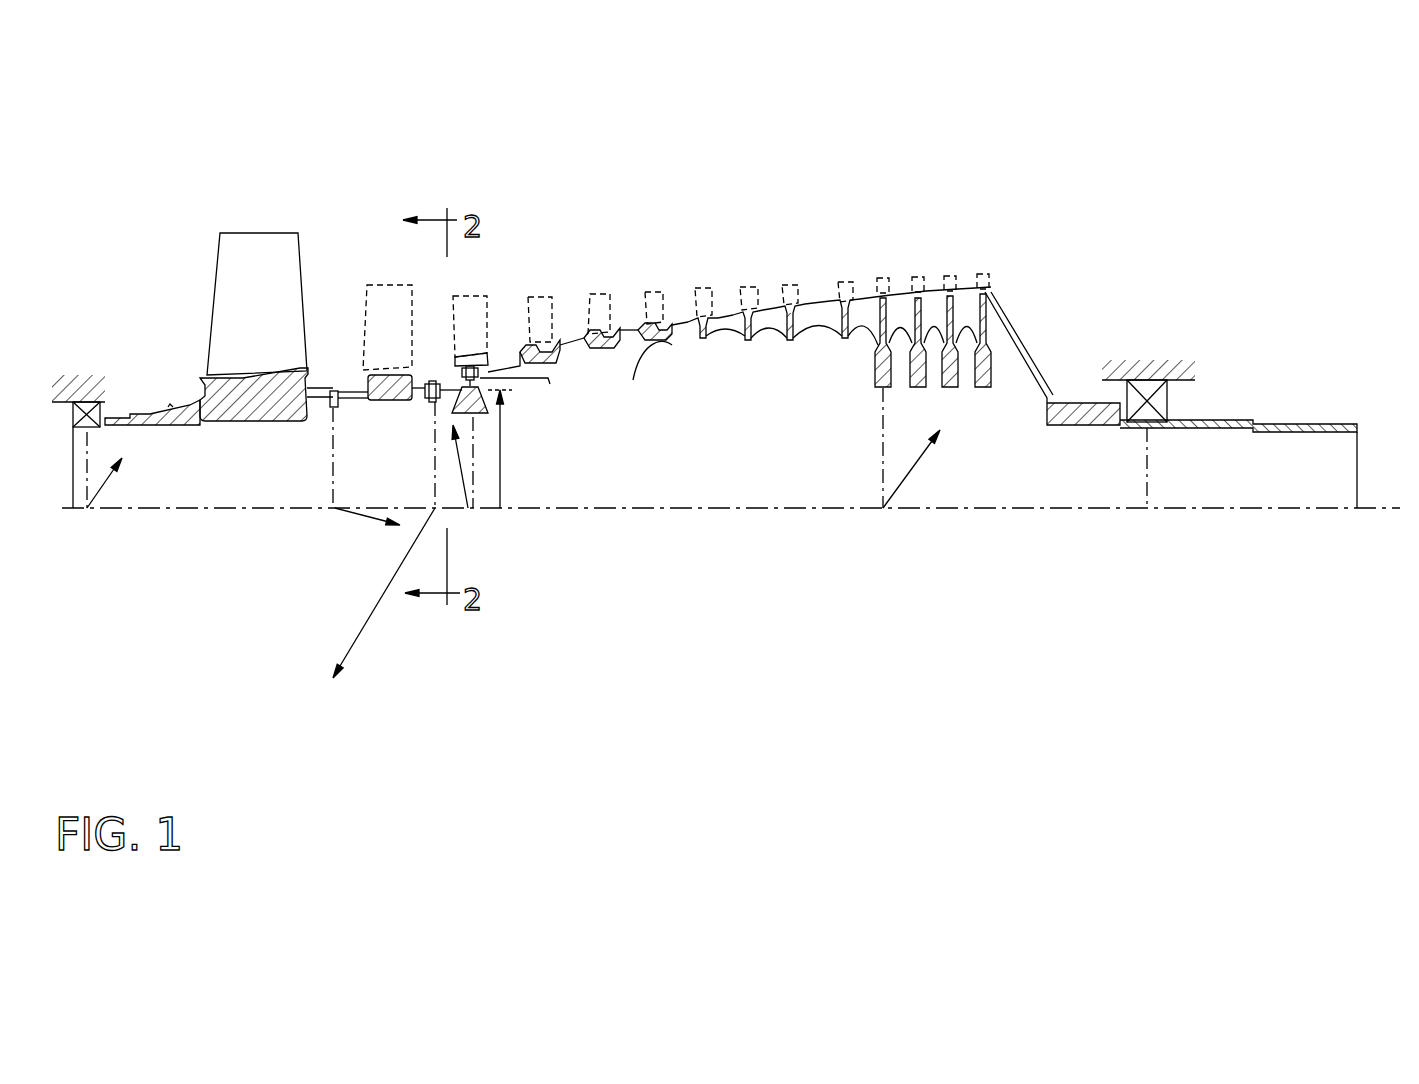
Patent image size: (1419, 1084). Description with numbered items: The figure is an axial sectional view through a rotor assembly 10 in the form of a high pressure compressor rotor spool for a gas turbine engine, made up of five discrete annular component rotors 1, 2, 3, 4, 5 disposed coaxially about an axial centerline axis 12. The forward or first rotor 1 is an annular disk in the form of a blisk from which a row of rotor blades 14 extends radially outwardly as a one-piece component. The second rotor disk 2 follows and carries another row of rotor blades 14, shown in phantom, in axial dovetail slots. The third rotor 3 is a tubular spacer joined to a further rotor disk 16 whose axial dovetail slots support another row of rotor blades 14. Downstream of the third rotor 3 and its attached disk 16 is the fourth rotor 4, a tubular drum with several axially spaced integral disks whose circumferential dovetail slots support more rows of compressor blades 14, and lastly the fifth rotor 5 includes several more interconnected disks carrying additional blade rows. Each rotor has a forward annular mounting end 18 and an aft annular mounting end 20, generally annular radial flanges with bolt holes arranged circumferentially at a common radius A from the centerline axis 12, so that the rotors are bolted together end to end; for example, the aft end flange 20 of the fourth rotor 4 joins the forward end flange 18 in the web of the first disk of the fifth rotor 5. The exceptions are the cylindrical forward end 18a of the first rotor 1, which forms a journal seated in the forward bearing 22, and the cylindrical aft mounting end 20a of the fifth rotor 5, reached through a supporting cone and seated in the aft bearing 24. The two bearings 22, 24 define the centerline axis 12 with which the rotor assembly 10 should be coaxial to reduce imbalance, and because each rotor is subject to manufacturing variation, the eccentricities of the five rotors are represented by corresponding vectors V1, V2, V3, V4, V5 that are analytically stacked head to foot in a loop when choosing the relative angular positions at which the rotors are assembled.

The rotor assembly 10 is at (1108, 246).
The axial centerline axis 12 is at (1062, 512).
The rotor blades 14 is at (250, 232).
The rotor disk 16 is at (485, 412).
The forward annular mounting end 18 is at (340, 408).
The cylindrical forward end 18a is at (112, 425).
The aft annular mounting end 20 is at (330, 402).
The cylindrical aft mounting end 20a is at (1162, 430).
The forward bearing 22 is at (105, 405).
The aft bearing 24 is at (1167, 400).
The first rotor 1 is at (247, 422).
The second rotor disk 2 is at (366, 402).
The third rotor 3 is at (462, 376).
The fourth rotor 4 is at (656, 338).
The fifth rotor 5 is at (1000, 335).
The common radius A is at (503, 430).
The vector V1 is at (102, 495).
The vector V2 is at (362, 520).
The vector V3 is at (362, 640).
The vector V4 is at (462, 505).
The vector V5 is at (912, 468).